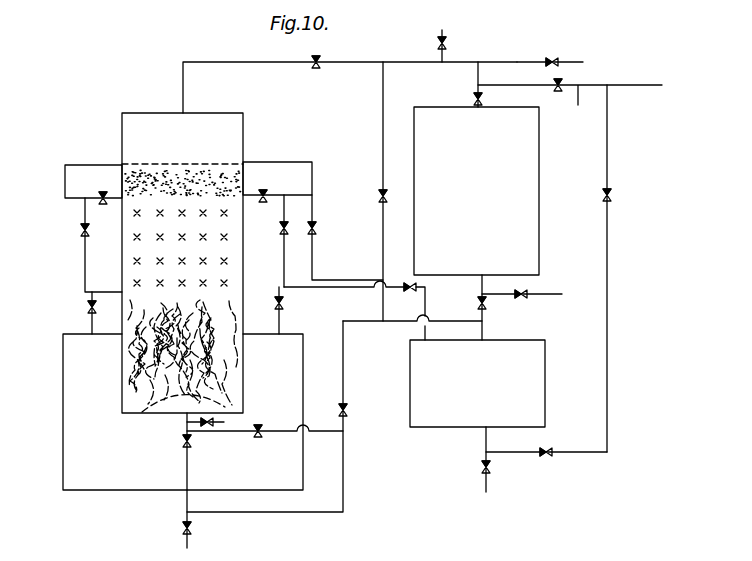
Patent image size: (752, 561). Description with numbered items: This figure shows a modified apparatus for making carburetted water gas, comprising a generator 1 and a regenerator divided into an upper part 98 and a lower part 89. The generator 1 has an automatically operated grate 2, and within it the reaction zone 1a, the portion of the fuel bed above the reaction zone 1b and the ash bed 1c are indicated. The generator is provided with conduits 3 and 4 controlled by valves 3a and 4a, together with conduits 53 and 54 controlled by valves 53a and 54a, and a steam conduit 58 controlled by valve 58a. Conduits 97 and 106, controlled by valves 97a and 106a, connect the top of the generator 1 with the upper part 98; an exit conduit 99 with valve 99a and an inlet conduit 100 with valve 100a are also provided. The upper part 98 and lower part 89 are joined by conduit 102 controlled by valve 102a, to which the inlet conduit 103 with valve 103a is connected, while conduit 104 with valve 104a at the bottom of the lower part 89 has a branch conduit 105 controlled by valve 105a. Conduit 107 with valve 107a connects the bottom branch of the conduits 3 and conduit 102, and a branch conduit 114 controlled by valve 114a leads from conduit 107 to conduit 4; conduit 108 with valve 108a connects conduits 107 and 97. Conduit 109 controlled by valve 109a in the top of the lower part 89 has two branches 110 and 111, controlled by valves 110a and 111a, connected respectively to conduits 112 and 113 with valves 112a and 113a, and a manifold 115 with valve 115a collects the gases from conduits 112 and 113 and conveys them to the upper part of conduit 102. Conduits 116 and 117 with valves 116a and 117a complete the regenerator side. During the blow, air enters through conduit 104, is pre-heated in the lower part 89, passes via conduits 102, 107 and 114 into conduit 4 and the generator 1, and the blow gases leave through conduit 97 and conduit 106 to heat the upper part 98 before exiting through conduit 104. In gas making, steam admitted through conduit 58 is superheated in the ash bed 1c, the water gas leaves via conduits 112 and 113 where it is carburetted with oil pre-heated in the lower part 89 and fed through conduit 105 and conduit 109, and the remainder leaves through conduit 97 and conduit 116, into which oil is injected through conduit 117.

The generator 1 is at (118, 123).
The reaction zone 1a is at (135, 259).
The portion of the fuel bed above the reaction zone 1b is at (143, 175).
The ash bed 1c is at (145, 352).
The automatically operated grate 2 is at (158, 402).
The conduit 3 is at (63, 416).
The valve 3a is at (185, 531).
The conduit 4 is at (185, 450).
The valve 4a is at (183, 444).
The conduit 53 is at (88, 301).
The valve 53a is at (90, 314).
The conduit 54 is at (283, 321).
The valve 54a is at (283, 303).
The conduit 58 is at (230, 435).
The valve 58a is at (207, 428).
The lower part of the regenerator 89 is at (546, 378).
The conduit 97 is at (230, 66).
The valve 97a is at (317, 67).
The upper part of the regenerator 98 is at (541, 162).
The exit conduit 99 is at (518, 60).
The valve 99a is at (554, 56).
The inlet conduit 100 is at (436, 41).
The valve 100a is at (447, 48).
The conduit 102 is at (484, 332).
The valve 102a is at (486, 304).
The inlet conduit 103 is at (557, 293).
The valve 103a is at (516, 289).
The conduit 104 is at (488, 497).
The valve 104a is at (483, 471).
The branch conduit 105 is at (572, 437).
The valve 105a is at (548, 457).
The conduit 106 is at (477, 74).
The valve 106a is at (477, 101).
The conduit 107 is at (272, 514).
The valve 107a is at (347, 415).
The conduit 108 is at (381, 128).
The valve 108a is at (381, 202).
The conduit 109 is at (427, 292).
The valve 109a is at (417, 283).
The branch conduit 110 is at (82, 259).
The valve 110a is at (82, 231).
The branch conduit 111 is at (283, 262).
The valve 111a is at (280, 229).
The conduit 112 is at (74, 200).
The valve 112a is at (100, 193).
The conduit 113 is at (277, 178).
The valve 113a is at (262, 193).
The branch conduit 114 is at (280, 435).
The valve 114a is at (259, 426).
The manifold 115 is at (267, 163).
The valve 115a is at (314, 226).
The conduit 116 is at (570, 107).
The valve 116a is at (561, 82).
The conduit 117 is at (610, 246).
The valve 117a is at (611, 197).